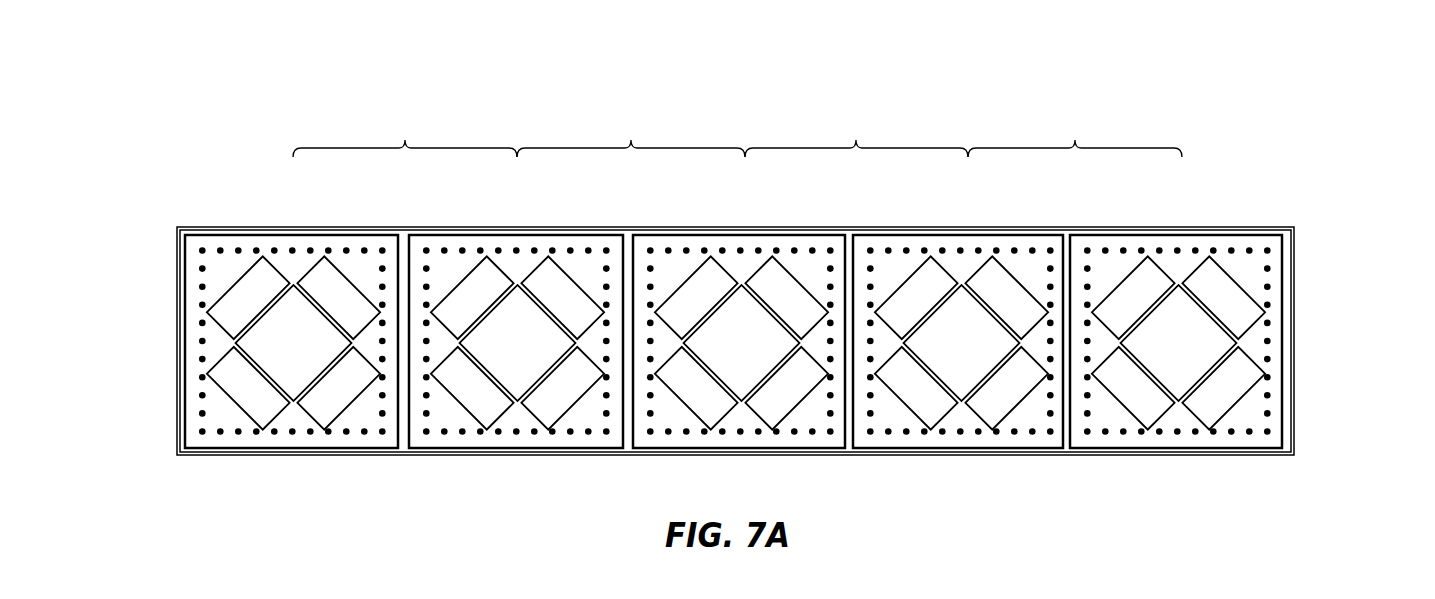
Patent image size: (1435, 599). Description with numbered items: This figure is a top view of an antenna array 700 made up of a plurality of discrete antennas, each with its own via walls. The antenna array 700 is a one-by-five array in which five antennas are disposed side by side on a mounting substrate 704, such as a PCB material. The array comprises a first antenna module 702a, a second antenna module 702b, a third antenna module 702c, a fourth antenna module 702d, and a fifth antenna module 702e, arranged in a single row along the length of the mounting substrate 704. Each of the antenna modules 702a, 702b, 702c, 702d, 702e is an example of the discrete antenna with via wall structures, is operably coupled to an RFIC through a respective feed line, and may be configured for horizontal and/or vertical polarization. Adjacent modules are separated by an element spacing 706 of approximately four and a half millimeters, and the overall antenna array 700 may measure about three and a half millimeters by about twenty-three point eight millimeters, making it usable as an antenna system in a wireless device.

The antenna array 700 is at (161, 78).
The first antenna module 702a is at (357, 270).
The second antenna module 702b is at (581, 272).
The third antenna module 702c is at (805, 272).
The fourth antenna module 702d is at (1025, 272).
The fifth antenna module 702e is at (1242, 278).
The mounting substrate 704 is at (1294, 455).
The element spacing 706 is at (405, 140).